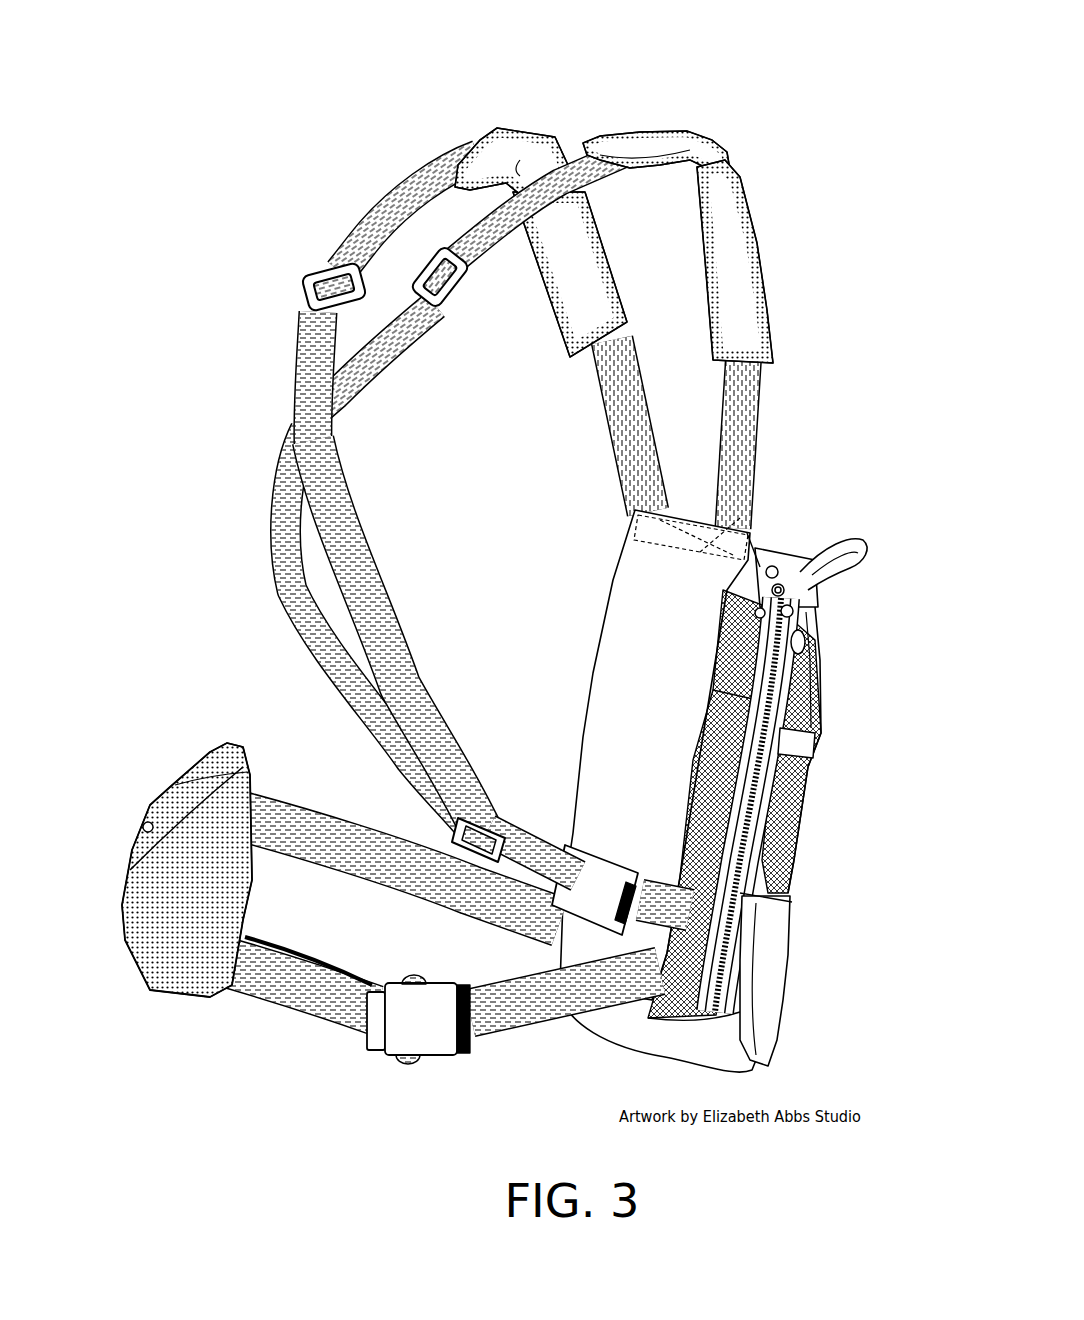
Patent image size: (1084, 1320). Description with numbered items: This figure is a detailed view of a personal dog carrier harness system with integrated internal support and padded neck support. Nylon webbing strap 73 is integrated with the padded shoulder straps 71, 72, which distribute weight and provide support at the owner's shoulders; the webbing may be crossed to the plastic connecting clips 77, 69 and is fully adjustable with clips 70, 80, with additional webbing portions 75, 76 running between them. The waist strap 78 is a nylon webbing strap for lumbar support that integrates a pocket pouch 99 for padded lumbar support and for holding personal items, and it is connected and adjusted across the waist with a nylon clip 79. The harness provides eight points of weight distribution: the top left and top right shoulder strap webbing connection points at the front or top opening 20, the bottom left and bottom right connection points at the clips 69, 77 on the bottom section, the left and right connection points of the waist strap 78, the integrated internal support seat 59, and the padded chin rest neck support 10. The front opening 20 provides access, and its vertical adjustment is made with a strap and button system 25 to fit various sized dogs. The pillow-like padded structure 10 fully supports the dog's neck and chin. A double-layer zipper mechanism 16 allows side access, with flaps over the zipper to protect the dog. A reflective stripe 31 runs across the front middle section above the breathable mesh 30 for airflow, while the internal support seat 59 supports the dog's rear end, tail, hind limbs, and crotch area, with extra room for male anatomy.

The padded chin rest neck support 10 is at (864, 538).
The double-layer zipper mechanism 16 is at (805, 632).
The front opening 20 is at (762, 541).
The strap and button system 25 is at (780, 586).
The breathable mesh 30 is at (782, 840).
The reflective stripe 31 is at (815, 743).
The integrated internal support seat 59 is at (785, 987).
The plastic connecting clip 69 is at (482, 830).
The adjustment clip 70 is at (300, 298).
The padded shoulder strap 71 is at (529, 122).
The padded shoulder strap 72 is at (744, 171).
The nylon webbing strap 73 is at (381, 200).
The side strap 75 is at (293, 388).
The lower strap 76 is at (462, 721).
The plastic connecting clip 77 is at (608, 891).
The waist strap 78 is at (295, 1029).
The nylon clip 79 is at (401, 1063).
The adjustment clip 80 is at (460, 296).
The pocket pouch 99 is at (140, 922).